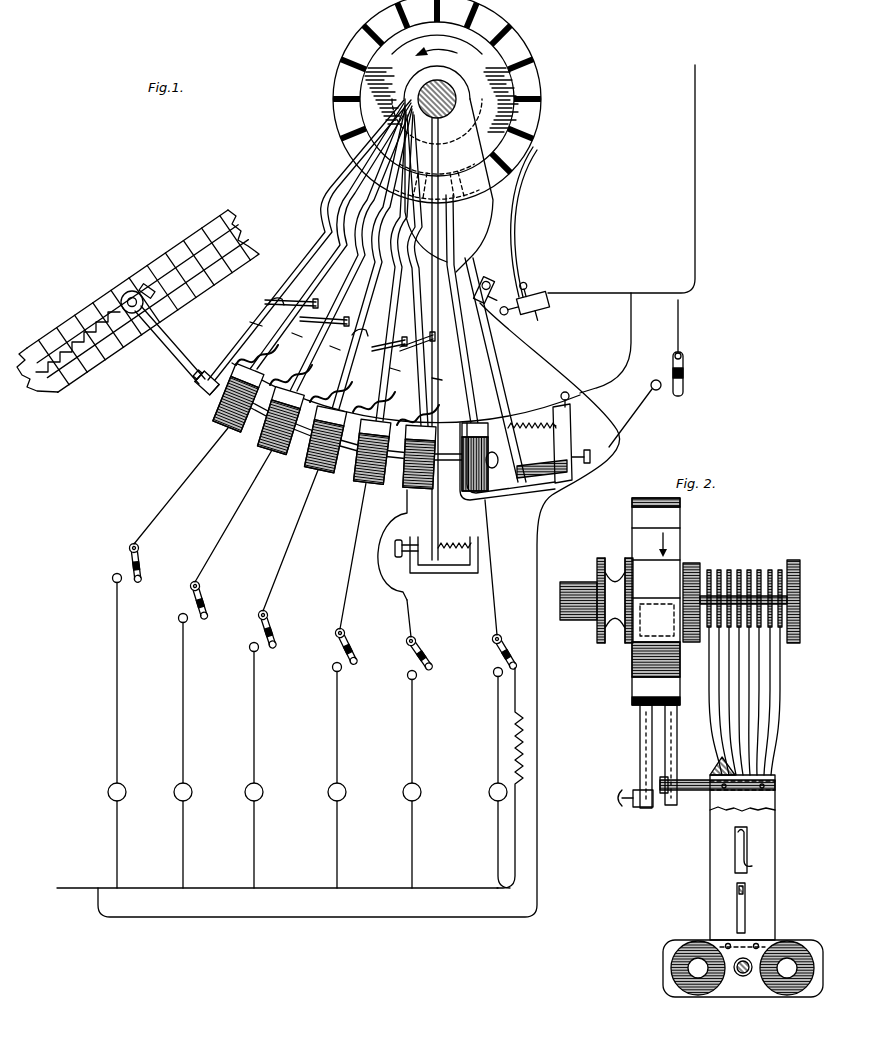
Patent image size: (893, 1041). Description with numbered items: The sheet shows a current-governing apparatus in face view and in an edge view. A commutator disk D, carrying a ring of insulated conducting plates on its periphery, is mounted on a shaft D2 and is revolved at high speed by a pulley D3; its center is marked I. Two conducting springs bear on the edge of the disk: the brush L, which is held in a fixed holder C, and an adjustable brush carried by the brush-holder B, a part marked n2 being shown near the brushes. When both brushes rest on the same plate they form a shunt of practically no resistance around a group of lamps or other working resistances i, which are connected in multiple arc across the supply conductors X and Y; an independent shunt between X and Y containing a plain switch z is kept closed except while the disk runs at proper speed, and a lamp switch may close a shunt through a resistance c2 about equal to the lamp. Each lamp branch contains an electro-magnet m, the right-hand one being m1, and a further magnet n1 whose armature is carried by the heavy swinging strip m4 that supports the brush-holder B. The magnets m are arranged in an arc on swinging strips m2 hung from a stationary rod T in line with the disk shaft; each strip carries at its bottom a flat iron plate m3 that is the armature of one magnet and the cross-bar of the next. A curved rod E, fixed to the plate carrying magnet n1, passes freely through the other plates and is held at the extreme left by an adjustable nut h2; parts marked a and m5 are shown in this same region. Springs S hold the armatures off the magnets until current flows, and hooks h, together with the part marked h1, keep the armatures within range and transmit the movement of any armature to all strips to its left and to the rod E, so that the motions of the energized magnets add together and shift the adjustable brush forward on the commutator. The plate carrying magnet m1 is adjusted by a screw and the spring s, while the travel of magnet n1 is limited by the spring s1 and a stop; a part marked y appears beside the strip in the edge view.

In FIG. 1, the commutator disk D is at (437, 101).
In FIG. 2, the commutator disk D is at (656, 601).
In FIG. 1, the hub and pointer arm I is at (442, 313).
In FIG. 1, the conducting-spring brush L is at (524, 222).
In FIG. 2, the conducting-spring brush L is at (638, 756).
In FIG. 1, the fixed brush holder C is at (526, 301).
In FIG. 2, the fixed brush holder C is at (635, 807).
In FIG. 1, the contact clamp n2 is at (490, 292).
In FIG. 1, the main supply conductor X is at (632, 228).
In FIG. 1, the plain switch z is at (635, 406).
In FIG. 1, the swinging strip m4 is at (406, 370).
In FIG. 2, the swinging strip m4 is at (782, 694).
In FIG. 1, the controlling electro-magnet m is at (302, 423).
In FIG. 2, the controlling electro-magnet m is at (743, 958).
In FIG. 1, the right-hand magnet m1 is at (419, 456).
In FIG. 2, the right-hand magnet m1 is at (712, 694).
In FIG. 1, the electro-magnet with paraboloidal pole n1 is at (507, 461).
In FIG. 1, the separating spring S is at (337, 384).
In FIG. 1, the swinging support strip m2 is at (337, 348).
In FIG. 2, the swinging support strip m2 is at (778, 884).
In FIG. 1, the hook h is at (368, 441).
In FIG. 2, the hook h is at (750, 862).
In FIG. 1, the hook h1 is at (360, 325).
In FIG. 1, the adjustable nut h2 is at (383, 426).
In FIG. 1, the adjusting spring s is at (454, 534).
In FIG. 2, the adjusting spring s is at (745, 912).
In FIG. 1, the limiting spring s1 is at (532, 436).
In FIG. 1, the bracket a is at (544, 437).
In FIG. 1, the rod m5 is at (531, 473).
In FIG. 1, the curved rod E is at (163, 337).
In FIG. 2, the curved rod E is at (746, 973).
In FIG. 1, the armature plate m3 is at (315, 523).
In FIG. 2, the armature plate m3 is at (728, 990).
In FIG. 1, the incandescent lamp i is at (313, 715).
In FIG. 1, the shunt resistance c2 is at (516, 778).
In FIG. 1, the main supply conductor Y is at (273, 878).
In FIG. 2, the shaft D2 is at (578, 611).
In FIG. 2, the pulley D3 is at (615, 607).
In FIG. 2, the stationary rod T is at (748, 601).
In FIG. 2, the leg y is at (667, 755).
In FIG. 2, the brush-holder B is at (717, 801).